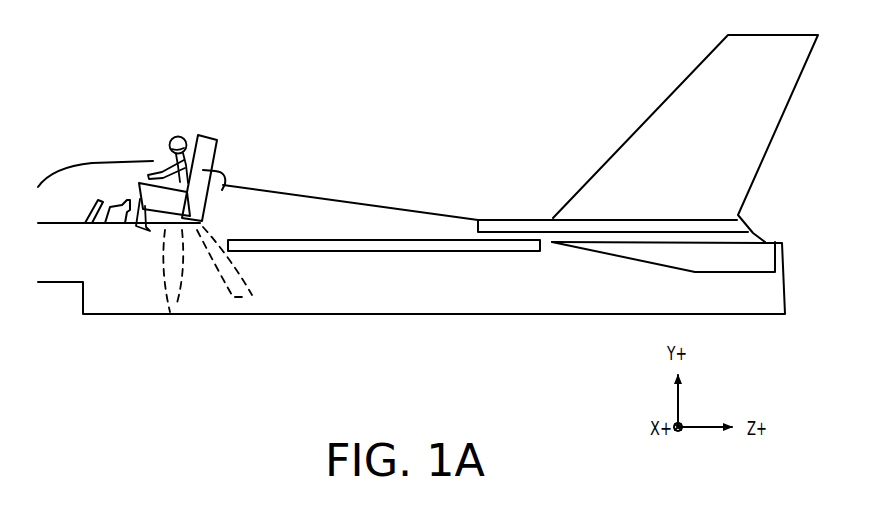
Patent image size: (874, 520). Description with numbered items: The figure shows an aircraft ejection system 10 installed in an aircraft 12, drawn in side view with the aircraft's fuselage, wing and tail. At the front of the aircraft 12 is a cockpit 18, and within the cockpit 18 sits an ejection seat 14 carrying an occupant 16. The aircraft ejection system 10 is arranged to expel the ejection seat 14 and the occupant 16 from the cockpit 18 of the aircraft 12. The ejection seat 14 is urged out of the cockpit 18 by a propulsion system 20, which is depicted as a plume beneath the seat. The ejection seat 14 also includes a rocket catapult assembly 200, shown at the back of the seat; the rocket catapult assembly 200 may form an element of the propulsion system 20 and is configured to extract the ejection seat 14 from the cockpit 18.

The aircraft ejection system 10 is at (346, 105).
The aircraft 12 is at (443, 290).
The ejection seat 14 is at (212, 151).
The occupant 16 is at (165, 142).
The cockpit 18 is at (73, 208).
The propulsion system 20 is at (170, 270).
The rocket catapult assembly 200 is at (201, 177).